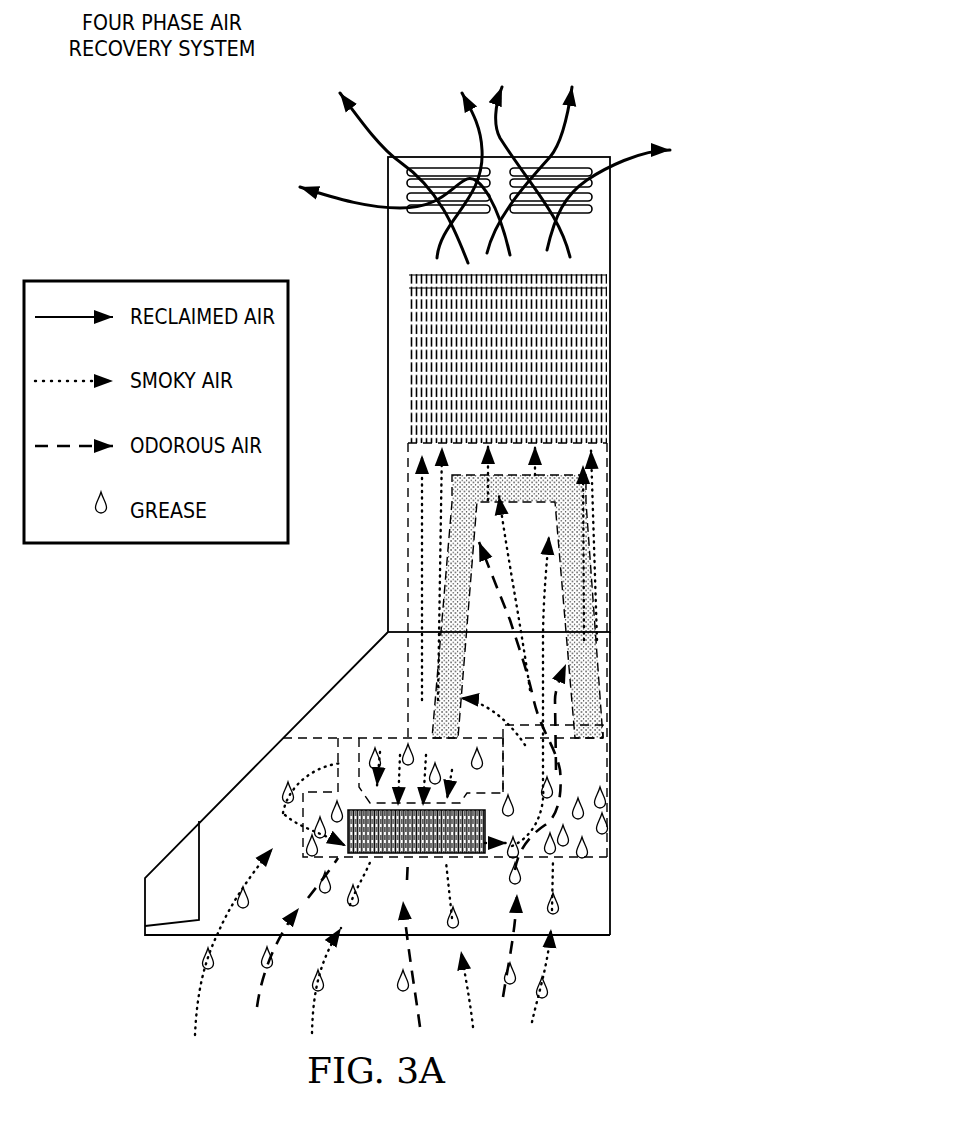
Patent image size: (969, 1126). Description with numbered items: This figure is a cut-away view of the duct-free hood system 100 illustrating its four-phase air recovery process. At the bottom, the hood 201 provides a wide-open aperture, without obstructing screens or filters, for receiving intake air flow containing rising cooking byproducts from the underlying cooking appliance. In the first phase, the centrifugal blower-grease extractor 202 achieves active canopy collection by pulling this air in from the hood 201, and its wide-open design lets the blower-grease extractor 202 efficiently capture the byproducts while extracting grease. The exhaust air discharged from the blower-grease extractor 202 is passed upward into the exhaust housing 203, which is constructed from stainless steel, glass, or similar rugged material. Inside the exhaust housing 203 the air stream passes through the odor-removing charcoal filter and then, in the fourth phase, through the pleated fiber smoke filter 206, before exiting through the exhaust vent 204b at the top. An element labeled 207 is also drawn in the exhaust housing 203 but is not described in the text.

The duct-free hood system 100 is at (192, 126).
The hood 201 is at (268, 753).
The centrifugal blower-grease extractor 202 is at (468, 860).
The exhaust housing 203 is at (387, 392).
The exhaust vent 204b is at (447, 161).
The pleated fiber smoke filter 206 is at (590, 568).
The filter 207 is at (607, 352).